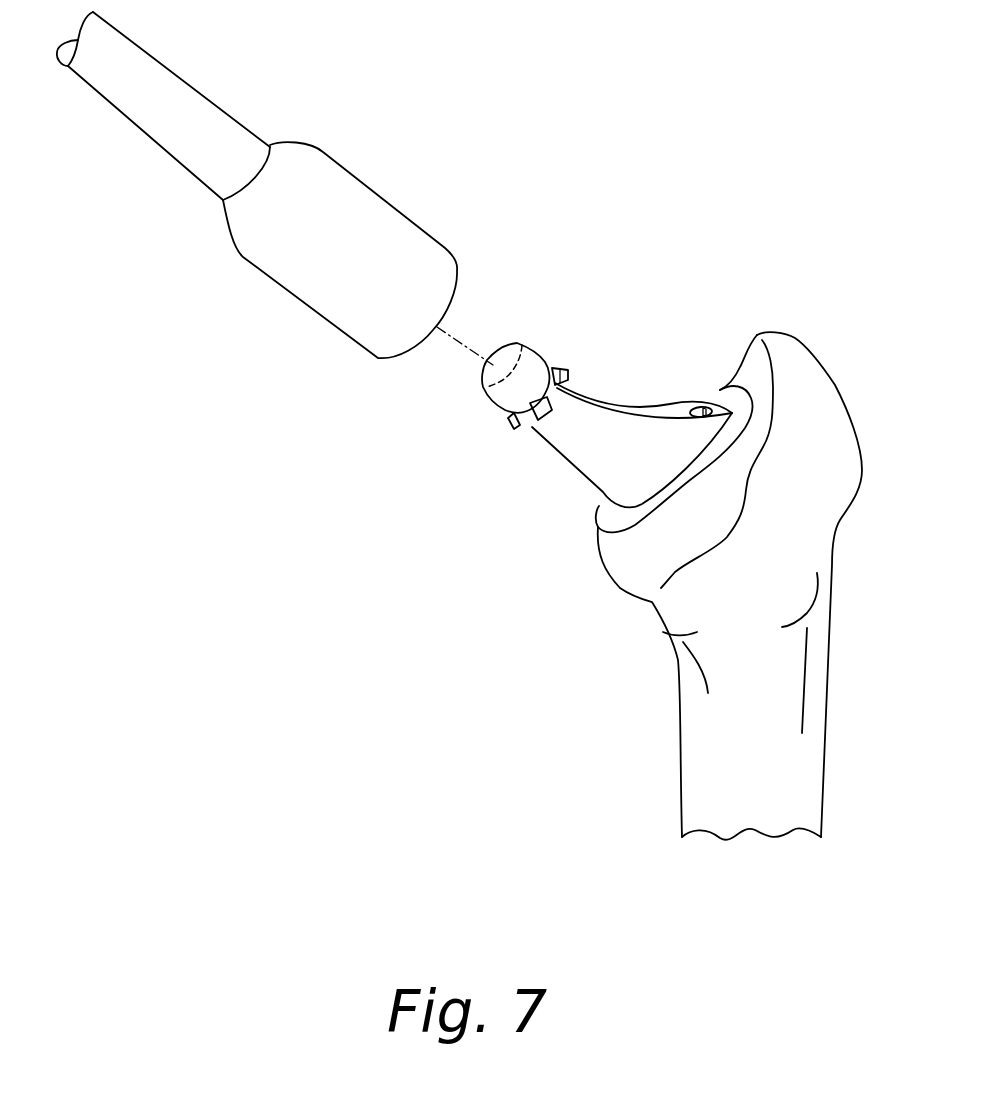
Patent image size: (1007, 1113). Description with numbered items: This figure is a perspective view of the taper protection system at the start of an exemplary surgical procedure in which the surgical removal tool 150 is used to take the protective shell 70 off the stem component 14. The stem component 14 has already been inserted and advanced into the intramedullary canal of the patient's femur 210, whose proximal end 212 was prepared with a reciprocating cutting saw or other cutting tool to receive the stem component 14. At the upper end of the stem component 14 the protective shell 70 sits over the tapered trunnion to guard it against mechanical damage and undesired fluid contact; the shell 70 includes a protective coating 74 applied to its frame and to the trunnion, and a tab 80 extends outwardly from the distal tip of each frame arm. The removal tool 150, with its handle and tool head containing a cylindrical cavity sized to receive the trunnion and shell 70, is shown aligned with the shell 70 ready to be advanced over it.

The surgical removal tool 150 is at (318, 157).
The protective shell 70 is at (521, 336).
The protective coating 74 is at (523, 347).
The tab 80 is at (571, 372).
The stem component 14 is at (590, 462).
The proximal end 212 is at (604, 514).
The femur 210 is at (698, 713).